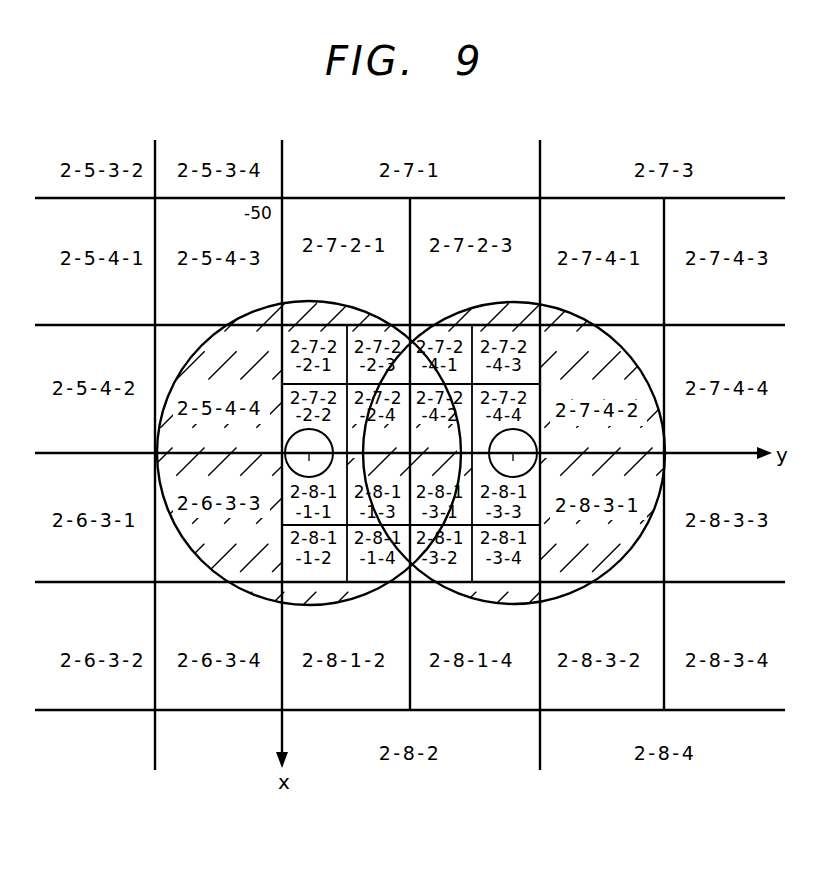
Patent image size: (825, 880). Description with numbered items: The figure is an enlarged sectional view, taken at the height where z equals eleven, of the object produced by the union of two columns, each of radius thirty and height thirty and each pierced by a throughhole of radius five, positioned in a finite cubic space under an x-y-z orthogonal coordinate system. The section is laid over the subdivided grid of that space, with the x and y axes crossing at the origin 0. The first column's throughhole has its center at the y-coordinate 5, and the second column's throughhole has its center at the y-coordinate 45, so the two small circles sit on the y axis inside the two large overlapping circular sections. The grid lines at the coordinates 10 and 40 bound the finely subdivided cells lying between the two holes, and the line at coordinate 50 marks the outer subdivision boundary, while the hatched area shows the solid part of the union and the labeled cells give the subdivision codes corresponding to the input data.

The x-axis origin line (y=0) 0 is at (276, 454).
The circular region centered at y= 5 is at (309, 453).
The cell boundary line at y= 10 is at (359, 453).
The cell boundary line at y= 40 is at (470, 453).
The circular region centered at y= 45 is at (513, 453).
The grid boundary lines at coordinate 50 is at (410, 455).